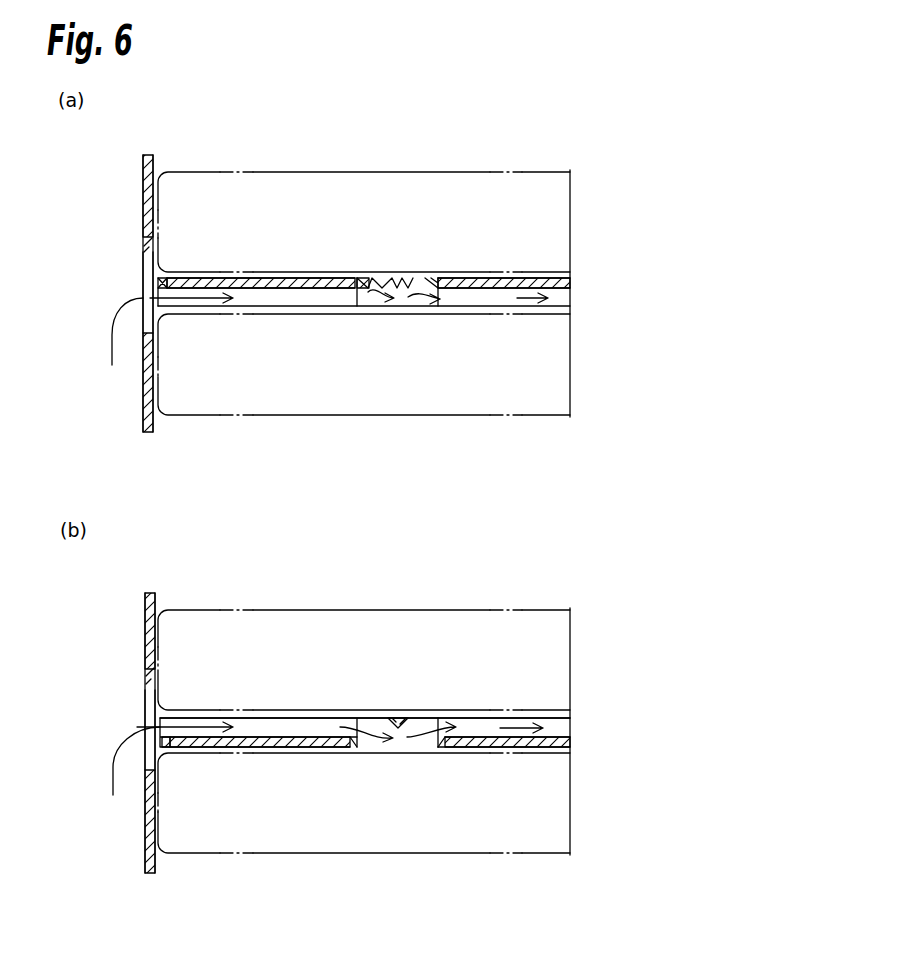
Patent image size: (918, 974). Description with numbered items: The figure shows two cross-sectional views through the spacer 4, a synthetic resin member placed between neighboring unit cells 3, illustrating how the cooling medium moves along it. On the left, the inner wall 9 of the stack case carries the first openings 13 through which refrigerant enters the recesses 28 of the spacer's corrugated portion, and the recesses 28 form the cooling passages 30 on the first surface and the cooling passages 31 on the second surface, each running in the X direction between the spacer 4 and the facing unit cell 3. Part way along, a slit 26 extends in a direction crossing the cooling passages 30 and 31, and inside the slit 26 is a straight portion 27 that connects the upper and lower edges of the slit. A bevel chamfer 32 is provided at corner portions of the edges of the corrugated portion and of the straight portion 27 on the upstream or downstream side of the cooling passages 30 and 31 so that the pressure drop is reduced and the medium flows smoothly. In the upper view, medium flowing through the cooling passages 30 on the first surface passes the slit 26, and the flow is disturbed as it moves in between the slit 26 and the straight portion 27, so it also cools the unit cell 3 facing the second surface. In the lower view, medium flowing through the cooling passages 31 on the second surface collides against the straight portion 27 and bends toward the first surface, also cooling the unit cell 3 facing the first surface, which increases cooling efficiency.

The unit cell 3 is at (252, 171).
The spacer 4 is at (263, 278).
The inner wall 9 is at (142, 176).
The first openings 13 is at (147, 262).
The slit 26 is at (432, 284).
The straight portion 27 is at (403, 283).
The recesses 28 is at (276, 292).
The cooling passages 30 is at (300, 298).
The cooling passages 31 is at (280, 723).
The bevel chamfer 32 is at (157, 287).